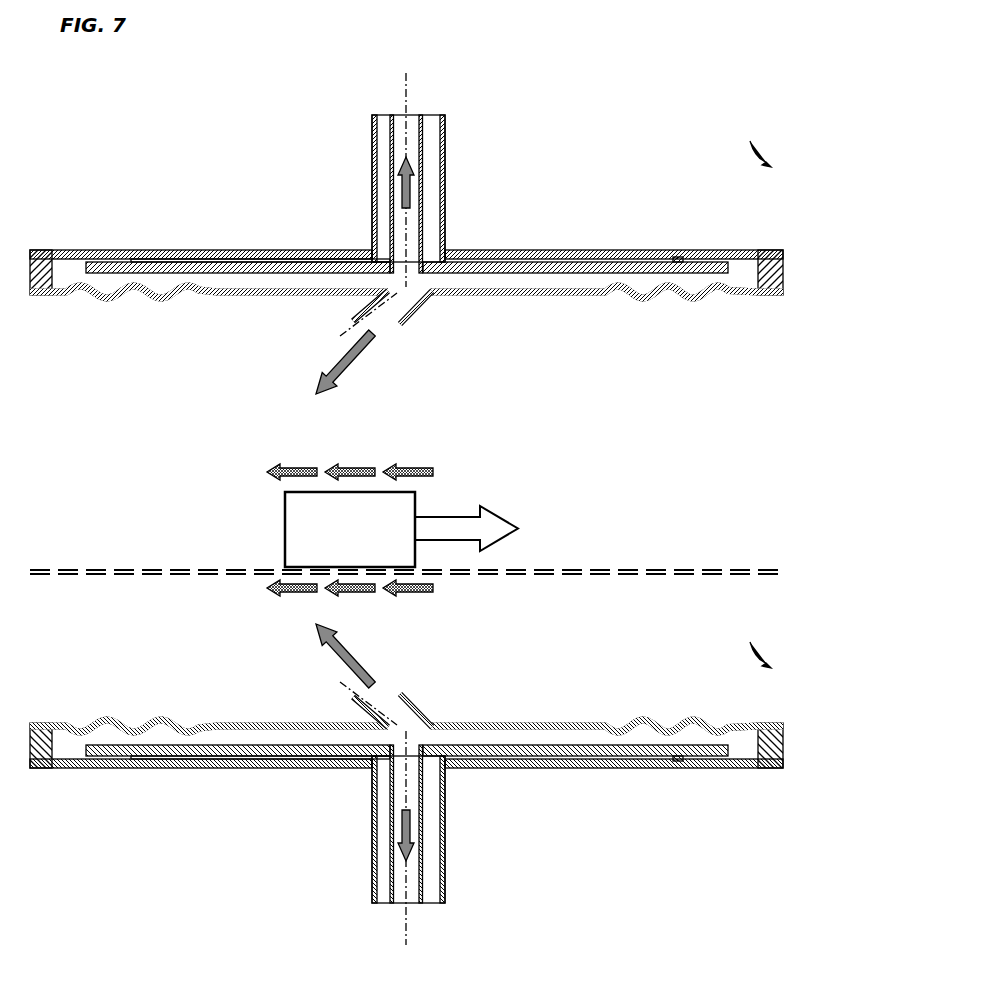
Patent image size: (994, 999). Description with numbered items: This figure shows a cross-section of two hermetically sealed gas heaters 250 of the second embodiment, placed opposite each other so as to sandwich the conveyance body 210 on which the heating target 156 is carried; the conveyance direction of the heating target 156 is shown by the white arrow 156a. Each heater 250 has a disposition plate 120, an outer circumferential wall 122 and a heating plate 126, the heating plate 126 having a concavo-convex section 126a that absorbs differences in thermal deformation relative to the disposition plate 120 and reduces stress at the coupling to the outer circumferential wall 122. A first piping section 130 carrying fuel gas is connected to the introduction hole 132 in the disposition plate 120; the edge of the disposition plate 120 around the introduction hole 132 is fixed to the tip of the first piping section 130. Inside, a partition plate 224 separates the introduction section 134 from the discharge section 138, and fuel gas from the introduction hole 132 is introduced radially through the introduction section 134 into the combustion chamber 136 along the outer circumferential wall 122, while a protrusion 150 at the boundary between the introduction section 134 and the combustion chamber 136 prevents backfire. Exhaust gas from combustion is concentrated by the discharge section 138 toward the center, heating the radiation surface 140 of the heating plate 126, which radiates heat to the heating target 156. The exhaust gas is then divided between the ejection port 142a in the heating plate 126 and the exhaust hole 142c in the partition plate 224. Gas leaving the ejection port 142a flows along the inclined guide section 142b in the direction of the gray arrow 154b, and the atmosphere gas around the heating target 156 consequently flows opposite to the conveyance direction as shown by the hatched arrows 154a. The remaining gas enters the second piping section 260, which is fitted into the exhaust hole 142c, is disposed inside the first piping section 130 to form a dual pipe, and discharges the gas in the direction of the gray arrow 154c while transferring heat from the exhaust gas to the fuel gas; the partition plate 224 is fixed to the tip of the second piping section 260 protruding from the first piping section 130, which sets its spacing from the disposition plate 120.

The disposition plate 120 is at (604, 250).
The outer circumferential wall 122 is at (785, 250).
The heating plate 126 is at (785, 293).
The concavo-convex section 126a is at (643, 298).
The first piping section 130 is at (445, 150).
The introduction hole 132 is at (412, 256).
The introduction section 134 is at (203, 258).
The combustion chamber 136 is at (63, 282).
The discharge section 138 is at (202, 280).
The radiation surface 140 is at (520, 292).
The ejection port 142a is at (352, 326).
The guide section 142b is at (418, 316).
The exhaust hole 142c is at (418, 273).
The protrusion 150 is at (678, 257).
The hatched arrow 154a is at (413, 465).
The gray arrow 154b is at (360, 360).
The gray arrow 154c is at (412, 190).
The heating target 156 is at (285, 508).
The white arrow 156a is at (465, 517).
The conveyance body 210 is at (692, 570).
The partition plate 224 is at (550, 276).
The hermetically sealed gas heater 250 is at (768, 139).
The second piping section 260 is at (428, 116).